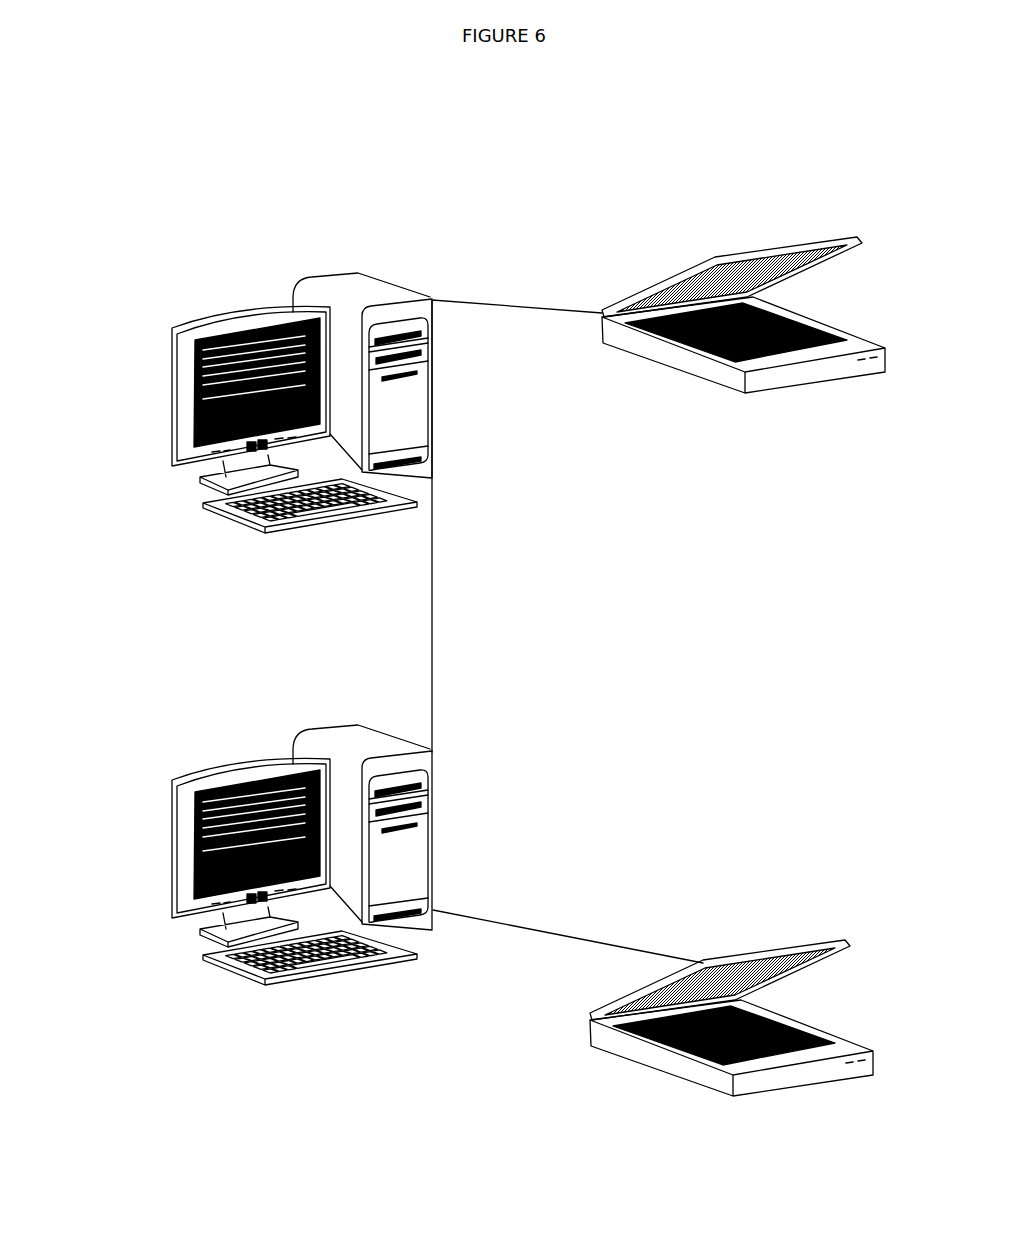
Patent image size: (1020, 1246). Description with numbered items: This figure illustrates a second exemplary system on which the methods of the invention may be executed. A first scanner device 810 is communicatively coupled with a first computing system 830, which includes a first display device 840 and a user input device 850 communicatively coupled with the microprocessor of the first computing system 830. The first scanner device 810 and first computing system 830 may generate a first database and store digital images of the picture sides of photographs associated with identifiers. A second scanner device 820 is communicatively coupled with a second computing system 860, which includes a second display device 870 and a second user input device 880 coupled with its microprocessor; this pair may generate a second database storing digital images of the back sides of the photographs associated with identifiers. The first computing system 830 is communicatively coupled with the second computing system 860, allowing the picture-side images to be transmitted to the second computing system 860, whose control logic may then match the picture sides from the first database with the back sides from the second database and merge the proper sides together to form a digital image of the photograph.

The first scanner device 810 is at (818, 381).
The second scanner device 820 is at (810, 1083).
The first computing system 830 is at (433, 403).
The first display device 840 is at (173, 402).
The user input device 850 is at (298, 528).
The second computing system 860 is at (433, 855).
The second display device 870 is at (173, 854).
The second user input device 880 is at (298, 980).